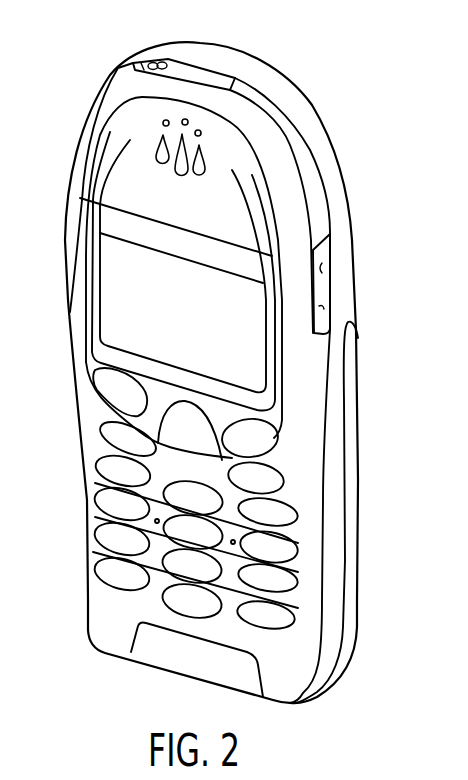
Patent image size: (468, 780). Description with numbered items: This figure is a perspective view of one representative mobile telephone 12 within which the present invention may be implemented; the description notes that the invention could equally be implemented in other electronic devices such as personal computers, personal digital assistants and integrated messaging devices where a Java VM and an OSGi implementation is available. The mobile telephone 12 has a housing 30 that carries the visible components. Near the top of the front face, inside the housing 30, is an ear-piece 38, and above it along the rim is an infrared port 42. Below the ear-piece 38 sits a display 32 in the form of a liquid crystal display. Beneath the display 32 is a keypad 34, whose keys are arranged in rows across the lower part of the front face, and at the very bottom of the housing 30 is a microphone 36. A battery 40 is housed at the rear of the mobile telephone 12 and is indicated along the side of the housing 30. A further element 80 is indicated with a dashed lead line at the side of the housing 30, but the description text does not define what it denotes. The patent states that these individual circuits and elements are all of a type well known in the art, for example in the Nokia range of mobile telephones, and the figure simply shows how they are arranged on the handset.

The mobile telephone 12 is at (310, 54).
The housing 30 is at (333, 177).
The display 32 is at (250, 352).
The keypad 34 is at (265, 622).
The microphone 36 is at (143, 650).
The ear-piece 38 is at (157, 140).
The battery 40 is at (351, 605).
The infrared port 42 is at (203, 70).
The internal antenna 80 is at (358, 493).